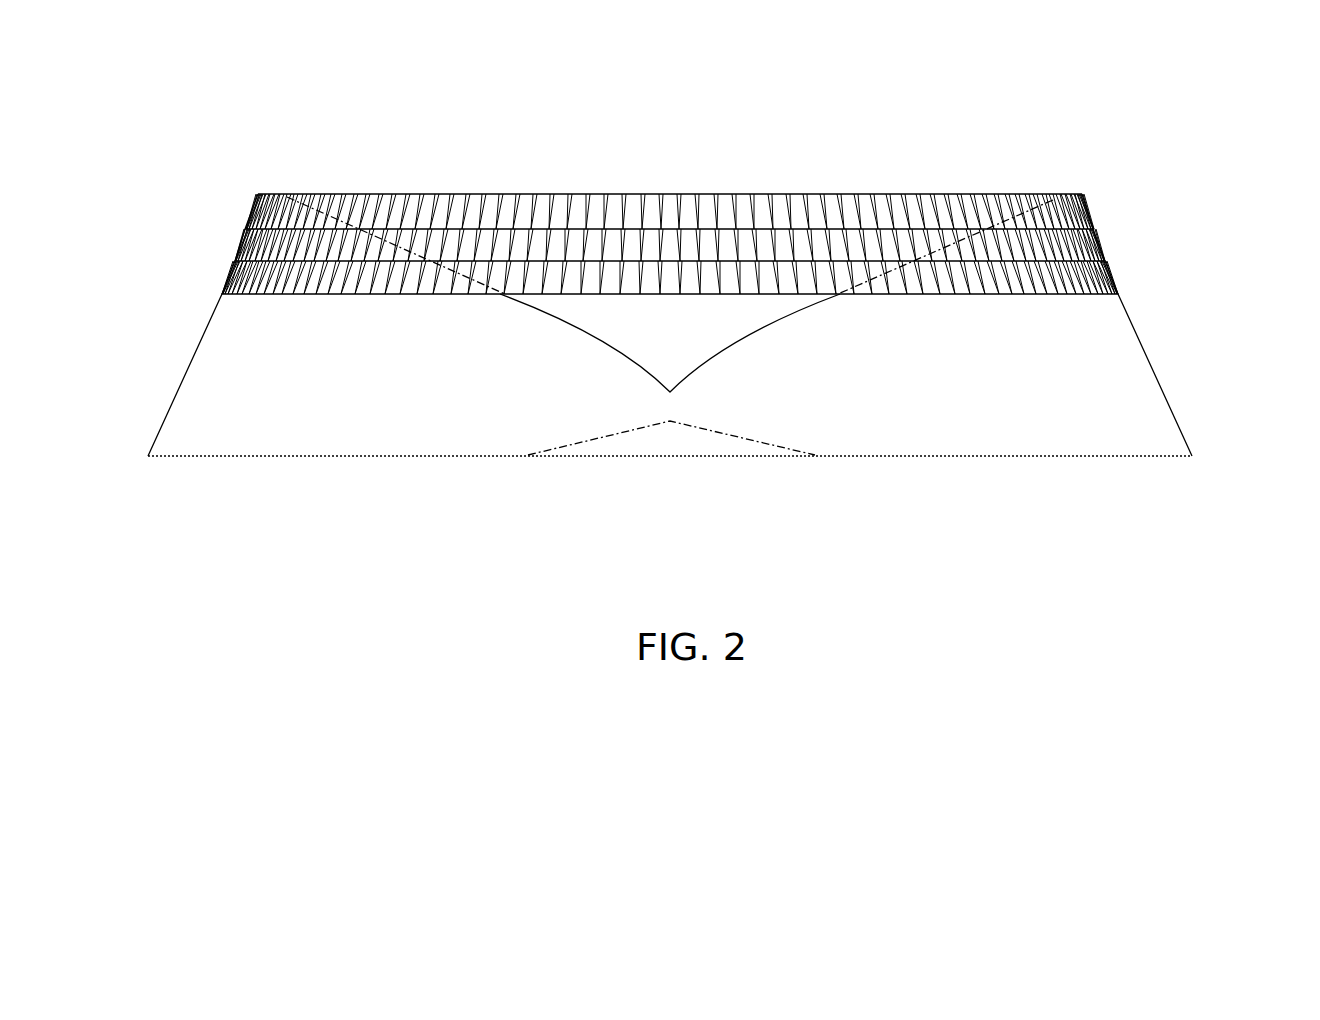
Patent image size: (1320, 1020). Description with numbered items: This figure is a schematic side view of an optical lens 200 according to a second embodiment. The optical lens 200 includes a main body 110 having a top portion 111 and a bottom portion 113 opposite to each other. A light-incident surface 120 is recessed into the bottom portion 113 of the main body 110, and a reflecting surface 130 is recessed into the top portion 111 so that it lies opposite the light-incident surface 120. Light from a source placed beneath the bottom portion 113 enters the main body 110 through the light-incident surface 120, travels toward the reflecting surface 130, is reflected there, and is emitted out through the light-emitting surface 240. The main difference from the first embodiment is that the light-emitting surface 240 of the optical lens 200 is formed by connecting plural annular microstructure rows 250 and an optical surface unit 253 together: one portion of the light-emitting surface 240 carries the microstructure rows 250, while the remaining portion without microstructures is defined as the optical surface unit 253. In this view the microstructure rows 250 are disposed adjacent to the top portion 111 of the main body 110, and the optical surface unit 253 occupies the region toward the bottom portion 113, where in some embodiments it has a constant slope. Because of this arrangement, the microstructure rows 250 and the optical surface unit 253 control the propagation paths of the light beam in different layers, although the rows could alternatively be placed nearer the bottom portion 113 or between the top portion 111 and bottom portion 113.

The optical lens 200 is at (134, 88).
The main body 110 is at (222, 365).
The top portion 111 is at (288, 195).
The bottom portion 113 is at (203, 463).
The light-incident surface 120 is at (595, 440).
The reflecting surface 130 is at (892, 277).
The light-emitting surface 240 is at (1238, 203).
The microstructure rows 250 is at (1105, 243).
The optical surface unit 253 is at (1125, 350).